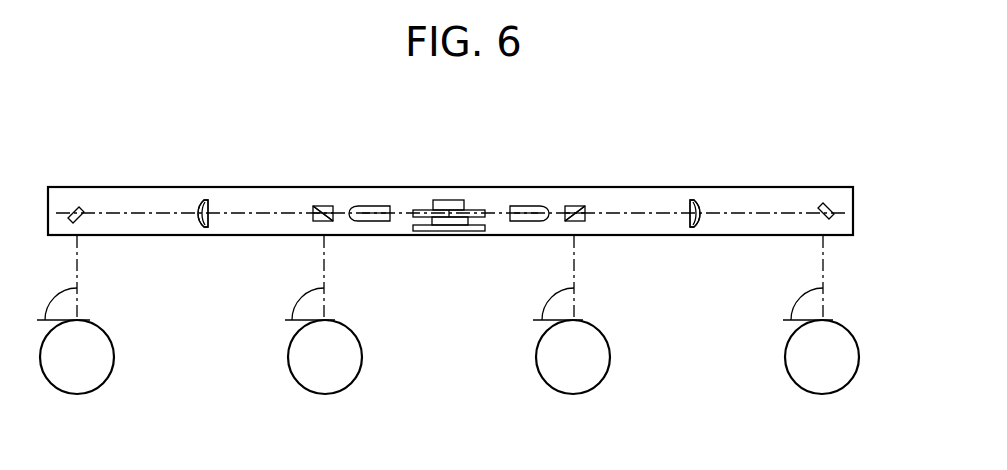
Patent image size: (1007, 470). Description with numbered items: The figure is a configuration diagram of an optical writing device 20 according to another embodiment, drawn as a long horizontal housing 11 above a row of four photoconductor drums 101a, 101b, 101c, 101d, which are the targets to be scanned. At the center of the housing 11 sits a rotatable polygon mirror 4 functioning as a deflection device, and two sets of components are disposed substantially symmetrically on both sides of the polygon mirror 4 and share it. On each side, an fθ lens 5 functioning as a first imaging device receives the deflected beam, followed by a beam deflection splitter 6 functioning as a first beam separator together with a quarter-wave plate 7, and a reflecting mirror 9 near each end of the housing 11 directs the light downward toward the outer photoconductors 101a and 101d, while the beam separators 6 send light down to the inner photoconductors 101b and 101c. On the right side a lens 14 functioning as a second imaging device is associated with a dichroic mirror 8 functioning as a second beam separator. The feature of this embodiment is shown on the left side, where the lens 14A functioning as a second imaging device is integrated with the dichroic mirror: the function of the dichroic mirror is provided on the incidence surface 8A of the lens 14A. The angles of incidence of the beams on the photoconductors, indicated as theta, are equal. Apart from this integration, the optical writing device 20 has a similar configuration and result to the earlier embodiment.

The polygon mirror 4 is at (421, 210).
The fθ lens 5 is at (372, 206).
The beam deflection splitter 6 is at (327, 206).
The quarter-wave plate 7 is at (313, 212).
The dichroic mirror 8 is at (689, 212).
The incidence surface of the lens 8A is at (211, 213).
The reflecting mirror 9 is at (80, 210).
The housing 11 is at (192, 236).
The lens 14 is at (694, 200).
The lens 14A is at (204, 200).
The optical writing device 20 is at (633, 129).
The photoconductor 101a is at (113, 316).
The photoconductor 101b is at (361, 316).
The photoconductor 101c is at (609, 316).
The photoconductor 101d is at (858, 316).